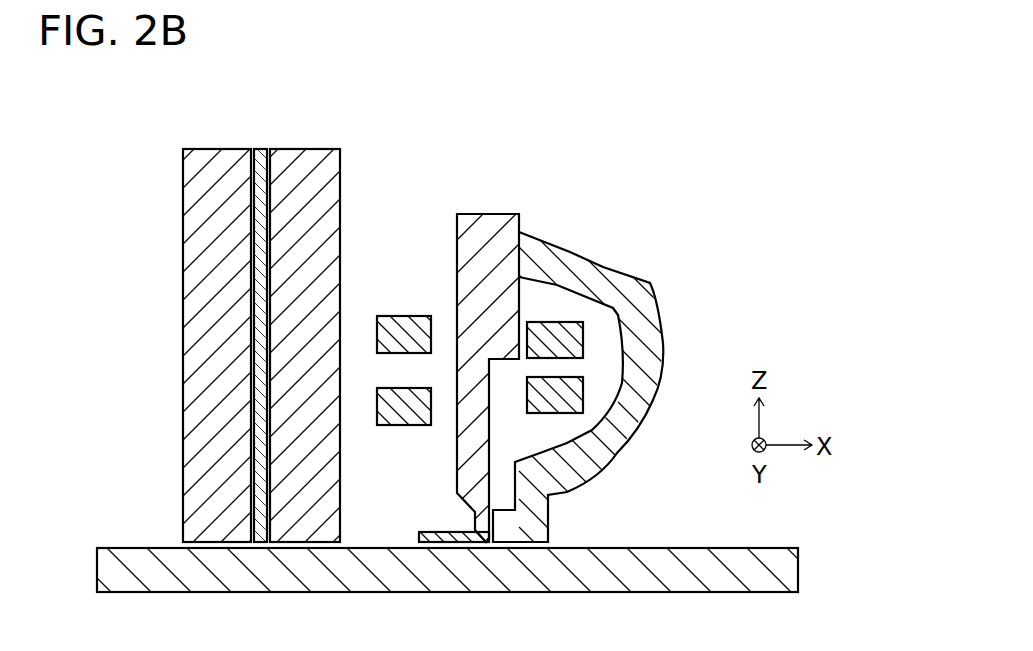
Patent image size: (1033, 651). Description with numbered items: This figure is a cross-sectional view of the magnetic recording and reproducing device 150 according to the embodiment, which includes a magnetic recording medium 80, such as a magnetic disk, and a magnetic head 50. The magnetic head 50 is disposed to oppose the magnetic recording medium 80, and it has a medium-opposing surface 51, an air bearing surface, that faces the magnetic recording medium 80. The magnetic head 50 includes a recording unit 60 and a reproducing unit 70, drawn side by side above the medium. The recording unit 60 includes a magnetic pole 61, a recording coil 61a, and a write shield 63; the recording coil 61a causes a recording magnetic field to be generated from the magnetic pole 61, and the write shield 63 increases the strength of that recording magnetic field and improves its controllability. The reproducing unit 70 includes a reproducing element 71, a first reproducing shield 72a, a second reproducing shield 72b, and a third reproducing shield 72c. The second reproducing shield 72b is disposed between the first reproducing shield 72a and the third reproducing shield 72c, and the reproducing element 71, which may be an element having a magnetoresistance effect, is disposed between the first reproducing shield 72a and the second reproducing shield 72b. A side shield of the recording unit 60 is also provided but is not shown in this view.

The magnetic recording and reproducing device 150 is at (595, 356).
The magnetic head 50 is at (552, 363).
The medium-opposing surface 51 is at (492, 542).
The recording unit 60 is at (520, 342).
The magnetic pole 61 is at (482, 522).
The recording coil 61a is at (405, 335).
The write shield 63 is at (523, 523).
The reproducing unit 70 is at (219, 351).
The reproducing element 71 is at (252, 547).
The first reproducing shield 72a is at (215, 182).
The second reproducing shield 72b is at (260, 178).
The third reproducing shield 72c is at (307, 182).
The magnetic recording medium 80 is at (133, 568).